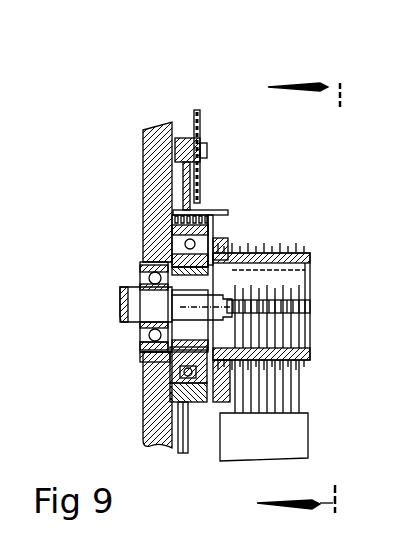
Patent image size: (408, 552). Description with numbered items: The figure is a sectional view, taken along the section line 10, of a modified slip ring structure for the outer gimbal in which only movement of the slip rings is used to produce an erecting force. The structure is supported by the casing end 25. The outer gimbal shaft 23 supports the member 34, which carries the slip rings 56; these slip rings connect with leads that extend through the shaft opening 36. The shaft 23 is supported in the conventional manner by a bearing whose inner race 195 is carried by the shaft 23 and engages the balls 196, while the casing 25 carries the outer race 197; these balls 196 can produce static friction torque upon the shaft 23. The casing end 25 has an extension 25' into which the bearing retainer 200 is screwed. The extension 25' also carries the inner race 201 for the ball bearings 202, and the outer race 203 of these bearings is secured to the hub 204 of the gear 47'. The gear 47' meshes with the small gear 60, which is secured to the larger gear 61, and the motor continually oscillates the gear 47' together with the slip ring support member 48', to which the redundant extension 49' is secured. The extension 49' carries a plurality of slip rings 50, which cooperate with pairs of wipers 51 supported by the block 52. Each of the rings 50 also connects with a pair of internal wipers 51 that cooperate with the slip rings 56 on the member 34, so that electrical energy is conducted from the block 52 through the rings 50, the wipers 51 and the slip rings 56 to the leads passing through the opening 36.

The section line 10 is at (322, 297).
The casing end 25 is at (134, 285).
The extension 25' is at (128, 374).
The shaft 23 is at (154, 307).
The shaft opening 36 is at (120, 303).
The small gear 60 is at (189, 140).
The larger gear 61 is at (200, 118).
The inner race 201 is at (183, 247).
The bearing retainer 200 is at (190, 309).
The inner race 195 is at (140, 326).
The balls 196 is at (150, 337).
The outer race 197 is at (148, 346).
The slip ring support member 48' is at (247, 234).
The redundant extension 49' is at (284, 249).
The wipers 51 is at (308, 331).
The slip rings 56 is at (262, 300).
The member 34 is at (314, 307).
The slip rings 50 is at (312, 362).
The block 52 is at (300, 441).
The ball bearings 202 is at (168, 371).
The outer race 203 is at (178, 383).
The hub 204 is at (196, 403).
The gear 47' is at (175, 444).